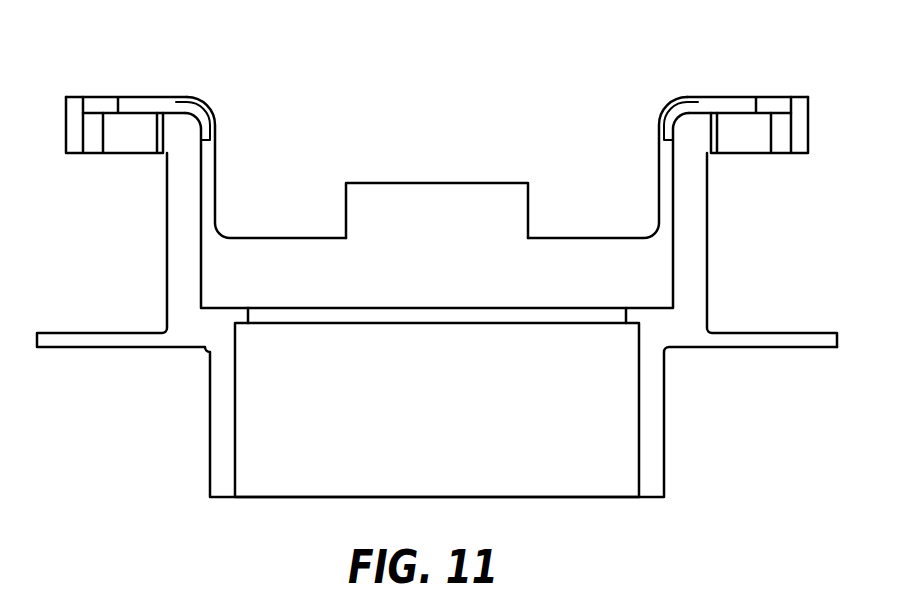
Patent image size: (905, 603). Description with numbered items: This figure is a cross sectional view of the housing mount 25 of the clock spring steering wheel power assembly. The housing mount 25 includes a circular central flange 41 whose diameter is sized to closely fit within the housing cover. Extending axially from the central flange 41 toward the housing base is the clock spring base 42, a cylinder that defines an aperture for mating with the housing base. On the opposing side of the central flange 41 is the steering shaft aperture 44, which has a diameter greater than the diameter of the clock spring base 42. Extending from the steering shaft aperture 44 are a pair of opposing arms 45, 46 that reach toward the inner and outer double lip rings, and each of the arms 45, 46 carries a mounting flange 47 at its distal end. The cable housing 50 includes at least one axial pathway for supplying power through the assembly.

The housing mount 25 is at (210, 405).
The circular central flange 41 is at (828, 333).
The clock spring base 42 is at (665, 470).
The steering shaft aperture 44 is at (203, 185).
The arm 45 is at (809, 156).
The arm 46 is at (77, 156).
The mounting flange 47 is at (90, 98).
The cable housing 50 is at (515, 185).